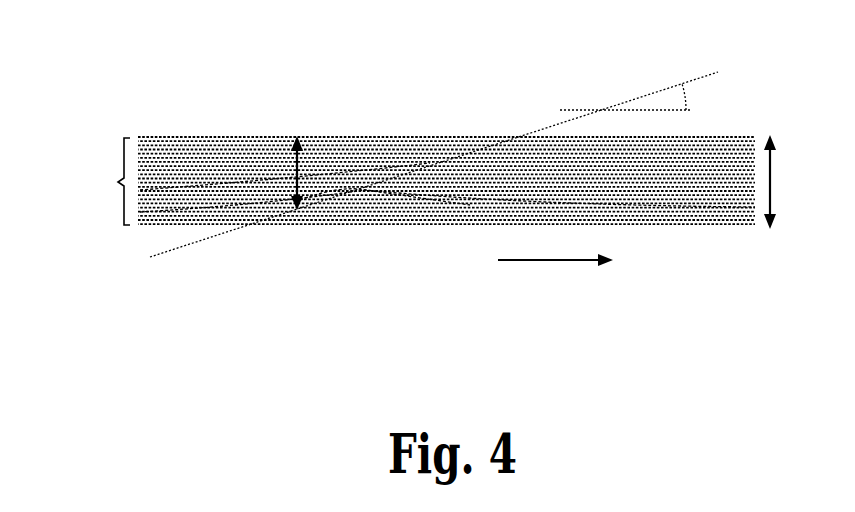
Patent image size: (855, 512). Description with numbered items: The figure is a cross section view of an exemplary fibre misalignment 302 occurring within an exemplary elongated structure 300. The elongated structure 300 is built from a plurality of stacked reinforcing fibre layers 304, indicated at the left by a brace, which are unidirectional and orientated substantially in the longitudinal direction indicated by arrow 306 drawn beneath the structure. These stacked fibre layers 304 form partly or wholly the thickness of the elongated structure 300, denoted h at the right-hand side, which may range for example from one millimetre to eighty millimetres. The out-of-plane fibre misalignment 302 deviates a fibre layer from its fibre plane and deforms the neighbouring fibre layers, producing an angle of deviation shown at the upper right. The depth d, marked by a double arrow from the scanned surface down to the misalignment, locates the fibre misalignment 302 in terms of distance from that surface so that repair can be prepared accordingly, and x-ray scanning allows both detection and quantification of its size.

The elongated structure 300 is at (243, 130).
The fibre misalignment 302 is at (364, 210).
The plurality of stacked reinforcing fibre layers 304 is at (92, 181).
The arrow indicating longitudinal direction 306 is at (555, 278).
The depth of the fibre misalignment d is at (300, 172).
The thickness of the elongated structure h is at (780, 182).